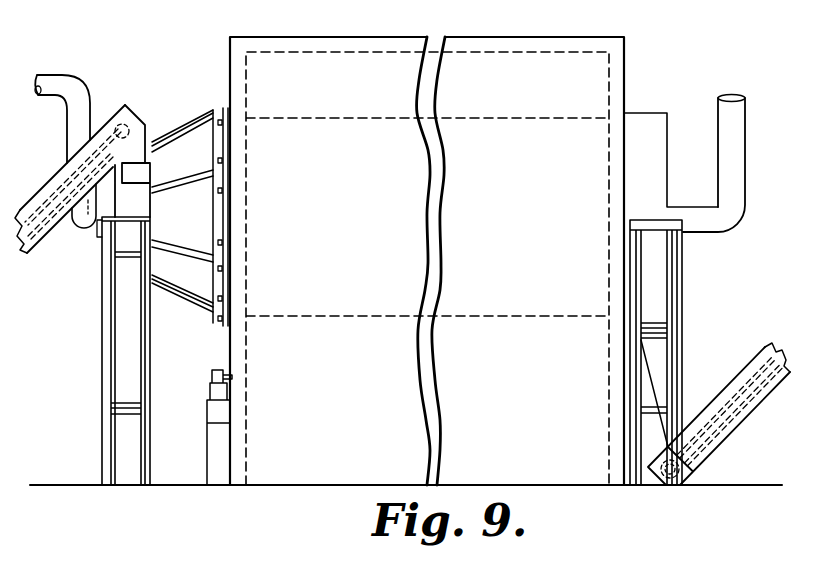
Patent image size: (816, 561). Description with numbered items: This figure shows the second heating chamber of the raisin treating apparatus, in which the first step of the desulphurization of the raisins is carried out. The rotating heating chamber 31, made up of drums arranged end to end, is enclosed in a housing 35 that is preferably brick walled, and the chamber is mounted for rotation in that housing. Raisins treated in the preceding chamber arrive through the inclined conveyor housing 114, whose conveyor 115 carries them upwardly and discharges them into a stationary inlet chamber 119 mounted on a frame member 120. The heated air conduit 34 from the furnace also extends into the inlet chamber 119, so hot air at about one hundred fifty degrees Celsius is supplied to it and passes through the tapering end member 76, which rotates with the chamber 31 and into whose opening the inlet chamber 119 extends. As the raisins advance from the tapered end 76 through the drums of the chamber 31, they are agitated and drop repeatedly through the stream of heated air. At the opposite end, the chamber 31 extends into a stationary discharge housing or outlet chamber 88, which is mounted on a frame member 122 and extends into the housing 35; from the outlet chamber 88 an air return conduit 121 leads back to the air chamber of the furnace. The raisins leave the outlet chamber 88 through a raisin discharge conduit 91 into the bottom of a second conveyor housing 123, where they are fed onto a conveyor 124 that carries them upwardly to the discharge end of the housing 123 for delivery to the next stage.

The heating chamber 31 is at (218, 113).
The heated air conduit 34 is at (78, 114).
The housing 35 is at (593, 70).
The tapering end member 76 is at (187, 278).
The stationary discharge housing or outlet chamber 88 is at (660, 120).
The raisin discharge conduit 91 is at (658, 360).
The conveyor housing 114 is at (53, 197).
The conveyor 115 is at (130, 122).
The stationary inlet chamber 119 is at (90, 217).
The frame member 120 is at (103, 343).
The air return conduit 121 is at (737, 150).
The frame member 122 is at (678, 310).
The conveyor housing 123 is at (710, 413).
The conveyor 124 is at (753, 357).